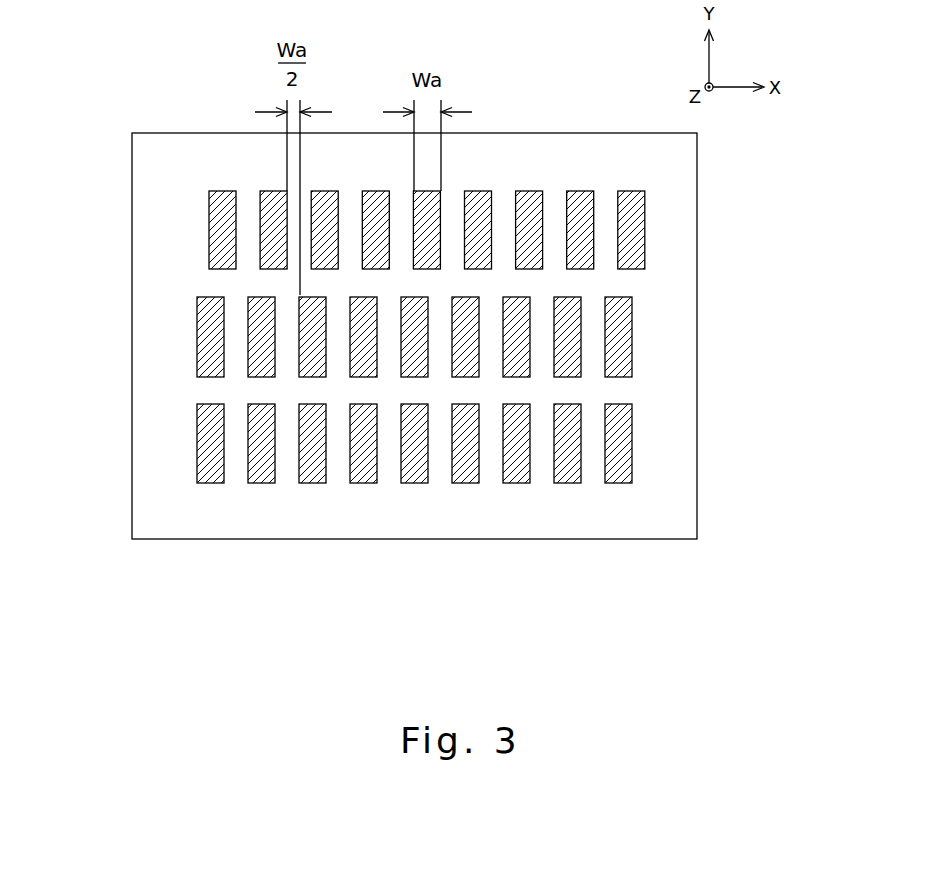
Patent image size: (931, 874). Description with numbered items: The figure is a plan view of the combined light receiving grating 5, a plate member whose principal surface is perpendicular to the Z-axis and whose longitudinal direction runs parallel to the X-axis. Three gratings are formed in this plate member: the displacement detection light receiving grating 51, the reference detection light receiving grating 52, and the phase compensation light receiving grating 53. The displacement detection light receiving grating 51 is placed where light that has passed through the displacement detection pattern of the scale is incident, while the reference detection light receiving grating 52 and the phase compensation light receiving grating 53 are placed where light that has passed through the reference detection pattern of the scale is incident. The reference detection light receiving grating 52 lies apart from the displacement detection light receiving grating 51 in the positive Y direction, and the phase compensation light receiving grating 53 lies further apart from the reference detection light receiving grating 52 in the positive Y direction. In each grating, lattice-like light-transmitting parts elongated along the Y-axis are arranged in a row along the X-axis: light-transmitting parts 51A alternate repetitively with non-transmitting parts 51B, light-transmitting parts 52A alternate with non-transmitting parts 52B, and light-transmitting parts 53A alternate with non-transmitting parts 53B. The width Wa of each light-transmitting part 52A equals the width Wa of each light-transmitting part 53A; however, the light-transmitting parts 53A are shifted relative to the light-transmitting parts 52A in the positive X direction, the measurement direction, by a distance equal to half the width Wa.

The combined light receiving grating 5 is at (201, 147).
The displacement detection light receiving grating 51 is at (484, 505).
The light-transmitting parts 51A is at (568, 484).
The non-transmitting parts 51B is at (545, 450).
The reference detection light receiving grating 52 is at (408, 314).
The light-transmitting parts 52A is at (206, 362).
The non-transmitting parts 52B is at (237, 322).
The phase compensation light receiving grating 53 is at (497, 170).
The light-transmitting parts 53A is at (580, 191).
The non-transmitting parts 53B is at (557, 222).